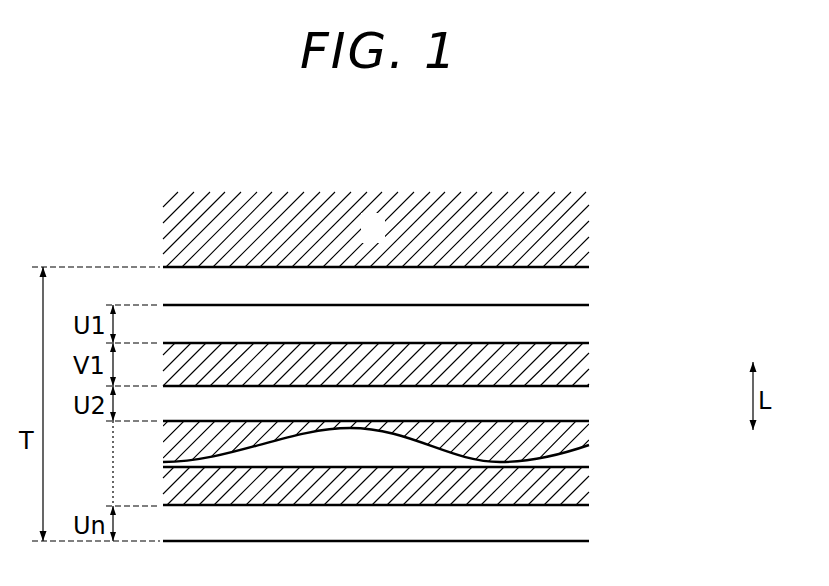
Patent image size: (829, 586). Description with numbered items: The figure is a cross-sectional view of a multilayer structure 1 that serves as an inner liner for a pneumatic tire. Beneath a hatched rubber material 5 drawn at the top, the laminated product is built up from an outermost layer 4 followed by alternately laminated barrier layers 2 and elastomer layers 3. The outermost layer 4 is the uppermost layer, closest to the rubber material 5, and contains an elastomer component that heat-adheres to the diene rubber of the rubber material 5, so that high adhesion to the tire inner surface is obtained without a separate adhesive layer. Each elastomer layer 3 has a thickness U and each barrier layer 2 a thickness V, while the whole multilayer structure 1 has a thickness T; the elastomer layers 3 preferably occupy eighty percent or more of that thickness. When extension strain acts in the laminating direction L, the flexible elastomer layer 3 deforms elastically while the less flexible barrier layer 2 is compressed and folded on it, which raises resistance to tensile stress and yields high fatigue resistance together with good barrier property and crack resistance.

The multilayer structure 1 is at (443, 327).
The barrier layer 2 is at (577, 320).
The elastomer layer 3 is at (577, 370).
The outermost layer 4 is at (577, 283).
The rubber material 5 is at (382, 240).